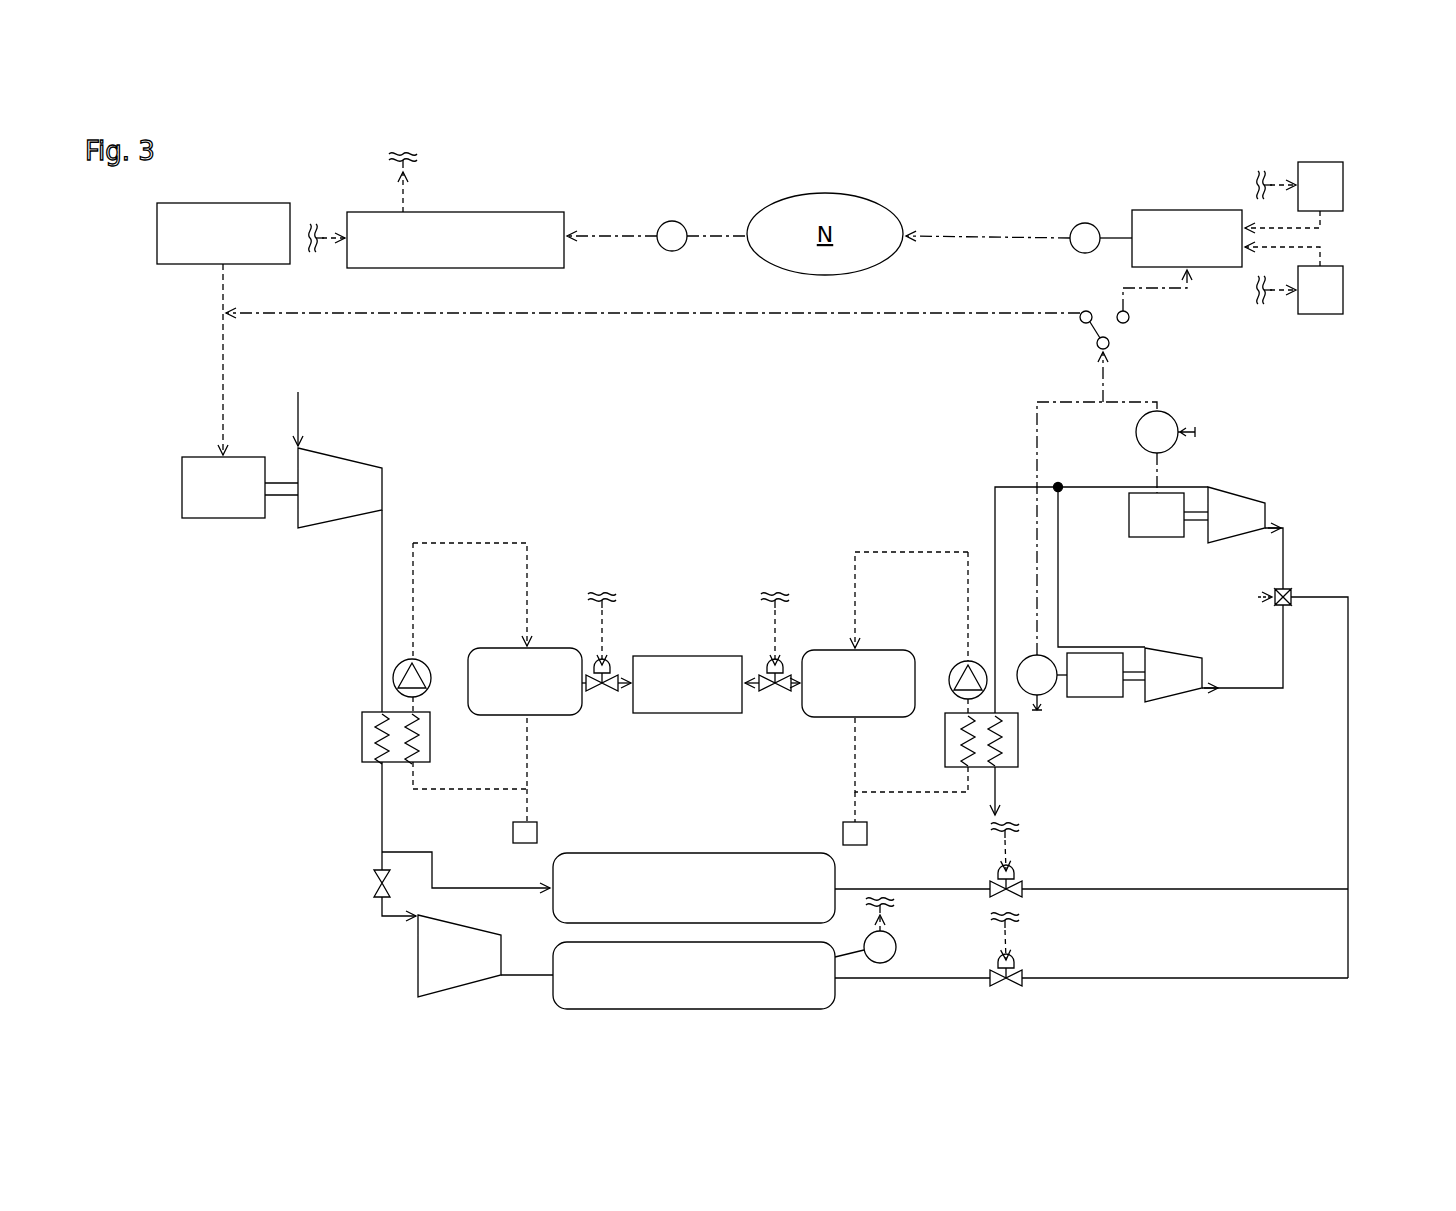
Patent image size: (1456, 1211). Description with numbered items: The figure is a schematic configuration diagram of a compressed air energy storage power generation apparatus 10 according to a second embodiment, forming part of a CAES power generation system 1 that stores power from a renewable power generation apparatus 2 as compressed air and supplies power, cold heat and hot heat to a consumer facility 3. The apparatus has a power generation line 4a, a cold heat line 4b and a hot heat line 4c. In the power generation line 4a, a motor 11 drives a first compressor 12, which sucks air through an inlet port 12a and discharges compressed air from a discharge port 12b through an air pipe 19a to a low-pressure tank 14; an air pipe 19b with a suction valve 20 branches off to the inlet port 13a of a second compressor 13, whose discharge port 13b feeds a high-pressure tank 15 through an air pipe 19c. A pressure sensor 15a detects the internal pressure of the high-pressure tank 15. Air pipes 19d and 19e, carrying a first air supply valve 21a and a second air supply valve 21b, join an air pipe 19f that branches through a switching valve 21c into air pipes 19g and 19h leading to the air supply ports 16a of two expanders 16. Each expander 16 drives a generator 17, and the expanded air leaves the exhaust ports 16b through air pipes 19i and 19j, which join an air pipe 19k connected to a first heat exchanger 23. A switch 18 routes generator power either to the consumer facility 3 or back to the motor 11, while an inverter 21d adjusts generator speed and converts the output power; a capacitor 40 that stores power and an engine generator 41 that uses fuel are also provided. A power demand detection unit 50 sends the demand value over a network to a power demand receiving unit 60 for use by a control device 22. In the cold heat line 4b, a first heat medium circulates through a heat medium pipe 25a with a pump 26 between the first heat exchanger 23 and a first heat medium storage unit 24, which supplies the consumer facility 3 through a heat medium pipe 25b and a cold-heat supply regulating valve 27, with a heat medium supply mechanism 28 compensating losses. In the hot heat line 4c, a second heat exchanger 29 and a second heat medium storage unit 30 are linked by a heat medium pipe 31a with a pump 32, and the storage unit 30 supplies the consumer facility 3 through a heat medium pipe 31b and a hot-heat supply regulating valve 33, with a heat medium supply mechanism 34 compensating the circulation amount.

The CAES power generation system 1 is at (295, 831).
The power generation apparatus 2 is at (157, 240).
The consumer facility 3 is at (1167, 210).
The power generation line 4a is at (1354, 829).
The cold heat line 4b is at (852, 545).
The hot heat line 4c is at (544, 599).
The CAES power generation apparatus 10 is at (1358, 434).
The motor 11 is at (182, 492).
The first compressor 12 is at (383, 470).
The inlet port 12a is at (300, 447).
The discharge port 12b is at (384, 508).
The second compressor 13 is at (418, 977).
The inlet port 13a is at (415, 920).
The discharge port 13b is at (501, 975).
The low-pressure tank 14 is at (835, 870).
The high-pressure tank 15 is at (835, 1003).
The pressure sensor 15a is at (896, 947).
The expander 16 is at (1268, 506).
The air supply port 16a is at (1270, 528).
The exhaust port 16b is at (1208, 487).
The generator 17 is at (1129, 520).
The switch 18 is at (1125, 321).
The air pipe 19a is at (380, 820).
The air pipe 19b is at (380, 916).
The air pipe 19c is at (532, 972).
The air pipe 19d is at (1130, 890).
The air pipe 19e is at (1142, 978).
The air pipe 19f is at (1346, 827).
The air pipe 19g is at (1282, 568).
The air pipe 19h is at (1282, 633).
The air pipe 19i is at (1080, 487).
The air pipe 19j is at (1057, 647).
The air pipe 19k is at (1010, 487).
The suction valve 20 is at (374, 883).
The first air supply valve 21a is at (1012, 896).
The second air supply valve 21b is at (1020, 985).
The switching valve 21c is at (1290, 594).
The inverter 21d is at (1172, 418).
The control device 22 is at (552, 212).
The first heat exchanger 23 is at (945, 752).
The first heat medium storage unit 24 is at (836, 650).
The heat medium pipe 25a is at (897, 554).
The heat medium pipe 25b is at (768, 695).
The pump 26 is at (954, 663).
The cold-heat supply regulating valve 27 is at (785, 695).
The heat medium supply mechanism 28 is at (843, 832).
The second heat exchanger 29 is at (430, 748).
The second heat medium storage unit 30 is at (493, 648).
The heat medium pipe 31a is at (500, 543).
The heat medium pipe 31b is at (610, 695).
The pump 32 is at (422, 660).
The hot-heat supply regulating valve 33 is at (598, 696).
The heat medium supply mechanism 34 is at (513, 832).
The capacitor 40 is at (1343, 185).
The engine generator 41 is at (1343, 290).
The power demand detection unit 50 is at (1072, 228).
The power demand receiving unit 60 is at (675, 221).